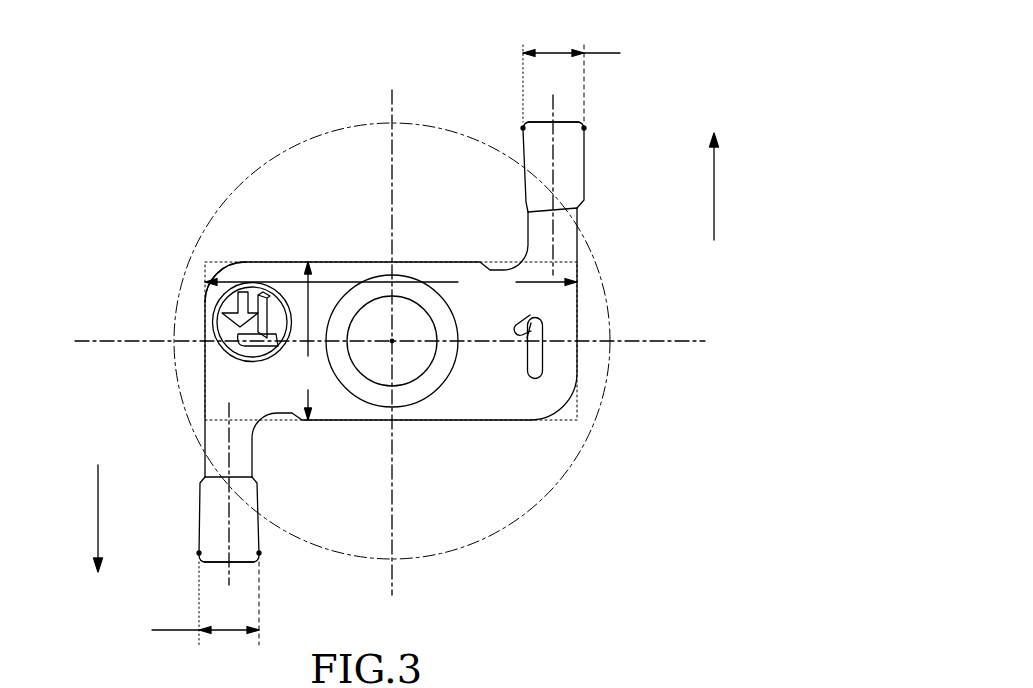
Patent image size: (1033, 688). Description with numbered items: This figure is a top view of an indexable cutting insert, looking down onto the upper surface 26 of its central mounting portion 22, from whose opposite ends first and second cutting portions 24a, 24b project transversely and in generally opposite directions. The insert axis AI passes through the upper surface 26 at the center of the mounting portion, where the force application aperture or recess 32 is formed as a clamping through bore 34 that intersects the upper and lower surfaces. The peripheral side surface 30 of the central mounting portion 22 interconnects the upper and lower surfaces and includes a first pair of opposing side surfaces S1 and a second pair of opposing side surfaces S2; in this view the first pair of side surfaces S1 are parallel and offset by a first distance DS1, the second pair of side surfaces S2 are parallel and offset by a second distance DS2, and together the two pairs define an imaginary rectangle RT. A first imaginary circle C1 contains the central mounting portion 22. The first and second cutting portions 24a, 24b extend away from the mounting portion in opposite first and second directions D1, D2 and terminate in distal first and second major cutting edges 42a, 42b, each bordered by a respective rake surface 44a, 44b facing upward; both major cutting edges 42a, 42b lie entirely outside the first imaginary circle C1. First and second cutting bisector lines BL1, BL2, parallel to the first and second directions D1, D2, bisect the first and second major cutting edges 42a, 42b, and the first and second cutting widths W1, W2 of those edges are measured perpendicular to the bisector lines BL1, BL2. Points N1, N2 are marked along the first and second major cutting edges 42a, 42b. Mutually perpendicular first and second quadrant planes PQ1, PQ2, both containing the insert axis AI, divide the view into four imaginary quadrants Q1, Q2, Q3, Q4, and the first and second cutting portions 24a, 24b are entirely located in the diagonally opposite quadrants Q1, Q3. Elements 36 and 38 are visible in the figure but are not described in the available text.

The central mounting portion 22 is at (492, 433).
The first cutting portion 24a is at (193, 518).
The second cutting portion 24b is at (596, 156).
The upper surface 26 is at (507, 405).
The peripheral side surface 30 is at (263, 254).
The force application aperture or recess 32 is at (371, 296).
The clamping through bore 34 is at (386, 366).
The logo emblem 36 is at (252, 322).
The keyhole slot 38 is at (528, 347).
The first major cutting edge 42a is at (244, 563).
The second major cutting edge 42b is at (522, 127).
The first rake surface 44a is at (244, 534).
The second rake surface 44b is at (538, 141).
The insert axis AI is at (393, 342).
The first cutting bisector line BL1 is at (228, 507).
The second cutting bisector line BL2 is at (556, 173).
The first imaginary circle C1 is at (552, 484).
The first direction D1 is at (95, 533).
The second direction D2 is at (714, 176).
The first distance DS1 is at (391, 283).
The second distance DS2 is at (303, 341).
The first point N1 is at (199, 553).
The second point N2 is at (584, 128).
The first quadrant plane PQ1 is at (392, 342).
The second quadrant plane PQ2 is at (392, 341).
The first imaginary quadrant Q1 is at (326, 504).
The second imaginary quadrant Q2 is at (319, 168).
The third imaginary quadrant Q3 is at (464, 166).
The fourth imaginary quadrant Q4 is at (466, 508).
The imaginary rectangle RT is at (566, 421).
The first pair of side surfaces S1 is at (204, 305).
The second pair of side surfaces S2 is at (289, 262).
The first cutting width W1 is at (190, 603).
The second cutting width W2 is at (587, 82).